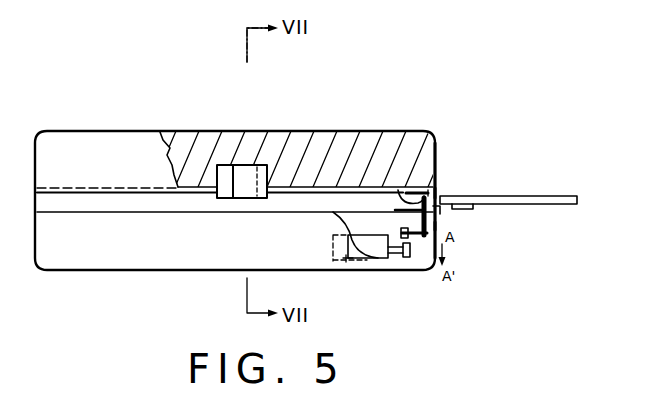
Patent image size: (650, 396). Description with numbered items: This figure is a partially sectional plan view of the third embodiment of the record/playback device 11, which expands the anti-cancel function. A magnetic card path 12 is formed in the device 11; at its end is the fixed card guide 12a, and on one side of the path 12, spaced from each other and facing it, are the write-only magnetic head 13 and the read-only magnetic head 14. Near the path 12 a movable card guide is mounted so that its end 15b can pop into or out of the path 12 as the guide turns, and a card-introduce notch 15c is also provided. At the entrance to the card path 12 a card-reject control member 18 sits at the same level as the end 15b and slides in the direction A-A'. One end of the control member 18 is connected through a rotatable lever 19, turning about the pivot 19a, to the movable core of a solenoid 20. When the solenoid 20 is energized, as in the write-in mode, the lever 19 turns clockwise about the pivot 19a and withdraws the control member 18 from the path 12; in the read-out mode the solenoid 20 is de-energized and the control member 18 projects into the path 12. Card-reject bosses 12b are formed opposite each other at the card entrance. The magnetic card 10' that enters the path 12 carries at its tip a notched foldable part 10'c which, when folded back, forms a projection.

The magnetic card 10' is at (519, 176).
The notched foldable part 10'c is at (493, 179).
The device 11 is at (330, 124).
The magnetic card path 12 is at (287, 184).
The fixed card guide 12a is at (437, 193).
The card-reject boss 12b is at (437, 192).
The write-only magnetic head 13 is at (222, 168).
The read-only magnetic head 14 is at (241, 168).
The end of movable card guide 15b is at (138, 202).
The card-introduce notch 15c is at (399, 192).
The card-reject control member 18 is at (438, 213).
The rotatable lever 19 is at (421, 240).
The pivot 19a is at (387, 205).
The solenoid 20 is at (347, 262).